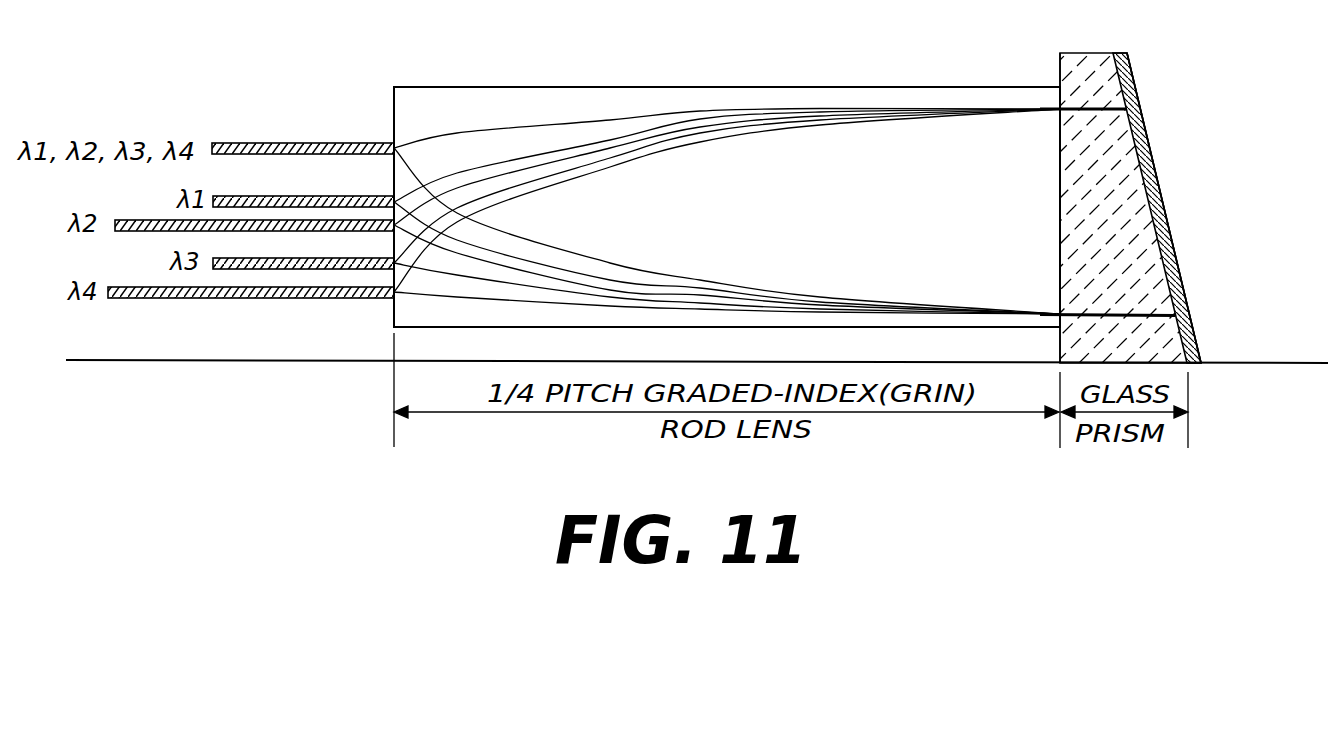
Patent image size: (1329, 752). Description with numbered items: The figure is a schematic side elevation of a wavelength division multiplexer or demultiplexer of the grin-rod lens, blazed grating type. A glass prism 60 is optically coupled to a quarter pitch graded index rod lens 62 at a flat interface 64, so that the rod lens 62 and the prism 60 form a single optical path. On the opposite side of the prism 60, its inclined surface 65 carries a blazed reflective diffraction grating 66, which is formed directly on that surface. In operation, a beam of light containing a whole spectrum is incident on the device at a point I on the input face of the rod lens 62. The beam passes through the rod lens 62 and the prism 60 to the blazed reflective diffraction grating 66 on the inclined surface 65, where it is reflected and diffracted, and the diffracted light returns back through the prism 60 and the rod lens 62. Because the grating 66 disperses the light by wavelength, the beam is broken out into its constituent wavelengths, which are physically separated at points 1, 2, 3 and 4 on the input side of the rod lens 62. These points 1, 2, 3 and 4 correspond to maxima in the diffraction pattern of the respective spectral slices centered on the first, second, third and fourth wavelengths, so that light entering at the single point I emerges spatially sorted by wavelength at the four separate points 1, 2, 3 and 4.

The incident point I is at (386, 134).
The point of first wavelength 1 is at (385, 189).
The point of second wavelength 2 is at (393, 232).
The point of third wavelength 3 is at (393, 276).
The point of fourth wavelength 4 is at (385, 299).
The glass prism 60 is at (1058, 46).
The quarter pitch graded index rod lens 62 is at (748, 87).
The flat interface 64 is at (1060, 157).
The inclined surface 65 is at (1117, 50).
The blazed reflective diffraction grating 66 is at (1172, 205).